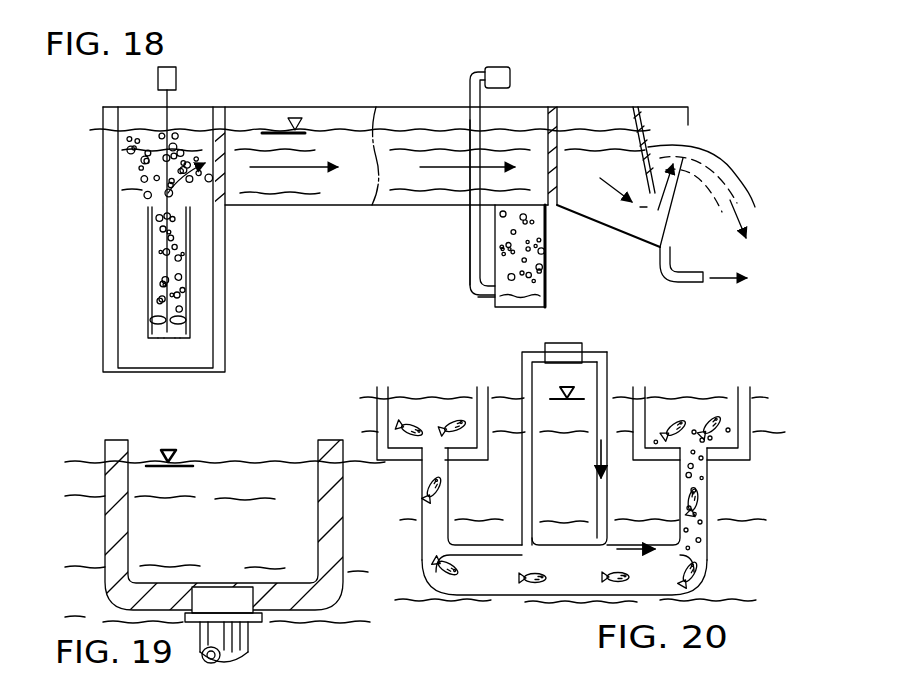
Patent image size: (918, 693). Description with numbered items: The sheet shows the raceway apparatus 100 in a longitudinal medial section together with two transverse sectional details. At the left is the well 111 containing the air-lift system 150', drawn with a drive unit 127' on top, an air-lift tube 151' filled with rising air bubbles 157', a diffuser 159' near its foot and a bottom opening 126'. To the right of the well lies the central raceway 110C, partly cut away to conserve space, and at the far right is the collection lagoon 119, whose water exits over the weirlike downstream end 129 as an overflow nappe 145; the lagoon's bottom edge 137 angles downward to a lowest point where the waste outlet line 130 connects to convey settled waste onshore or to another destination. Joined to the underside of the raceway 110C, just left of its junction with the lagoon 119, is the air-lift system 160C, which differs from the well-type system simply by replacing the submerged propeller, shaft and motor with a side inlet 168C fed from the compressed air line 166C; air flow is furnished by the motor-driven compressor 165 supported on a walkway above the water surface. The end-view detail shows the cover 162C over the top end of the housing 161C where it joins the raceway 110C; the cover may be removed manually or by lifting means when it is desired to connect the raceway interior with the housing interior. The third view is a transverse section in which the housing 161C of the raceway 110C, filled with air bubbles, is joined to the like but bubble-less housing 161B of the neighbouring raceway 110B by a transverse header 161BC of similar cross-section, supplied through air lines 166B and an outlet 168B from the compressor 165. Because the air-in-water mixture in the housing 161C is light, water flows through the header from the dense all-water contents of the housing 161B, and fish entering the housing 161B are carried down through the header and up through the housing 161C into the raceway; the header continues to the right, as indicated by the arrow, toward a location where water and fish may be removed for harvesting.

In FIG. 18, the raceway apparatus 100 is at (330, 86).
In FIG. 18, the well 111 is at (117, 107).
In FIG. 18, the drive motor 127' is at (197, 187).
In FIG. 18, the central raceway 110C is at (419, 107).
In FIG. 19, the central raceway 110C is at (232, 446).
In FIG. 20, the central raceway 110C is at (724, 462).
In FIG. 18, the motor-driven compressor 165 is at (504, 67).
In FIG. 20, the motor-driven compressor 165 is at (582, 352).
In FIG. 18, the collection lagoon 119 is at (601, 107).
In FIG. 18, the overflow water 145 is at (650, 148).
In FIG. 18, the weirlike downstream end 129 is at (672, 213).
In FIG. 18, the waste outlet line 130 is at (686, 285).
In FIG. 18, the bottom edge 137 is at (598, 226).
In FIG. 18, the air lift tube 151' is at (130, 272).
In FIG. 18, the air bubbles 157' is at (217, 262).
In FIG. 18, the diffuser 159' is at (119, 323).
In FIG. 18, the air-lift system 150' is at (220, 219).
In FIG. 18, the bottom opening 126' is at (169, 371).
In FIG. 18, the compressed air line 166C is at (470, 242).
In FIG. 20, the compressed air line 166C is at (597, 508).
In FIG. 18, the air outlet 168C is at (495, 302).
In FIG. 20, the air outlet 168C is at (704, 550).
In FIG. 18, the air-lift housing 161C is at (537, 261).
In FIG. 19, the air-lift housing 161C is at (255, 639).
In FIG. 20, the air-lift housing 161C is at (680, 502).
In FIG. 18, the air-lift system 160C is at (548, 297).
In FIG. 19, the cover 162C is at (230, 585).
In FIG. 20, the raceway 110B is at (392, 460).
In FIG. 20, the air-lift housing 161B is at (424, 532).
In FIG. 20, the air outlet B 168B is at (440, 556).
In FIG. 20, the air line B 166B is at (522, 483).
In FIG. 20, the connecting channel 161BC is at (515, 588).